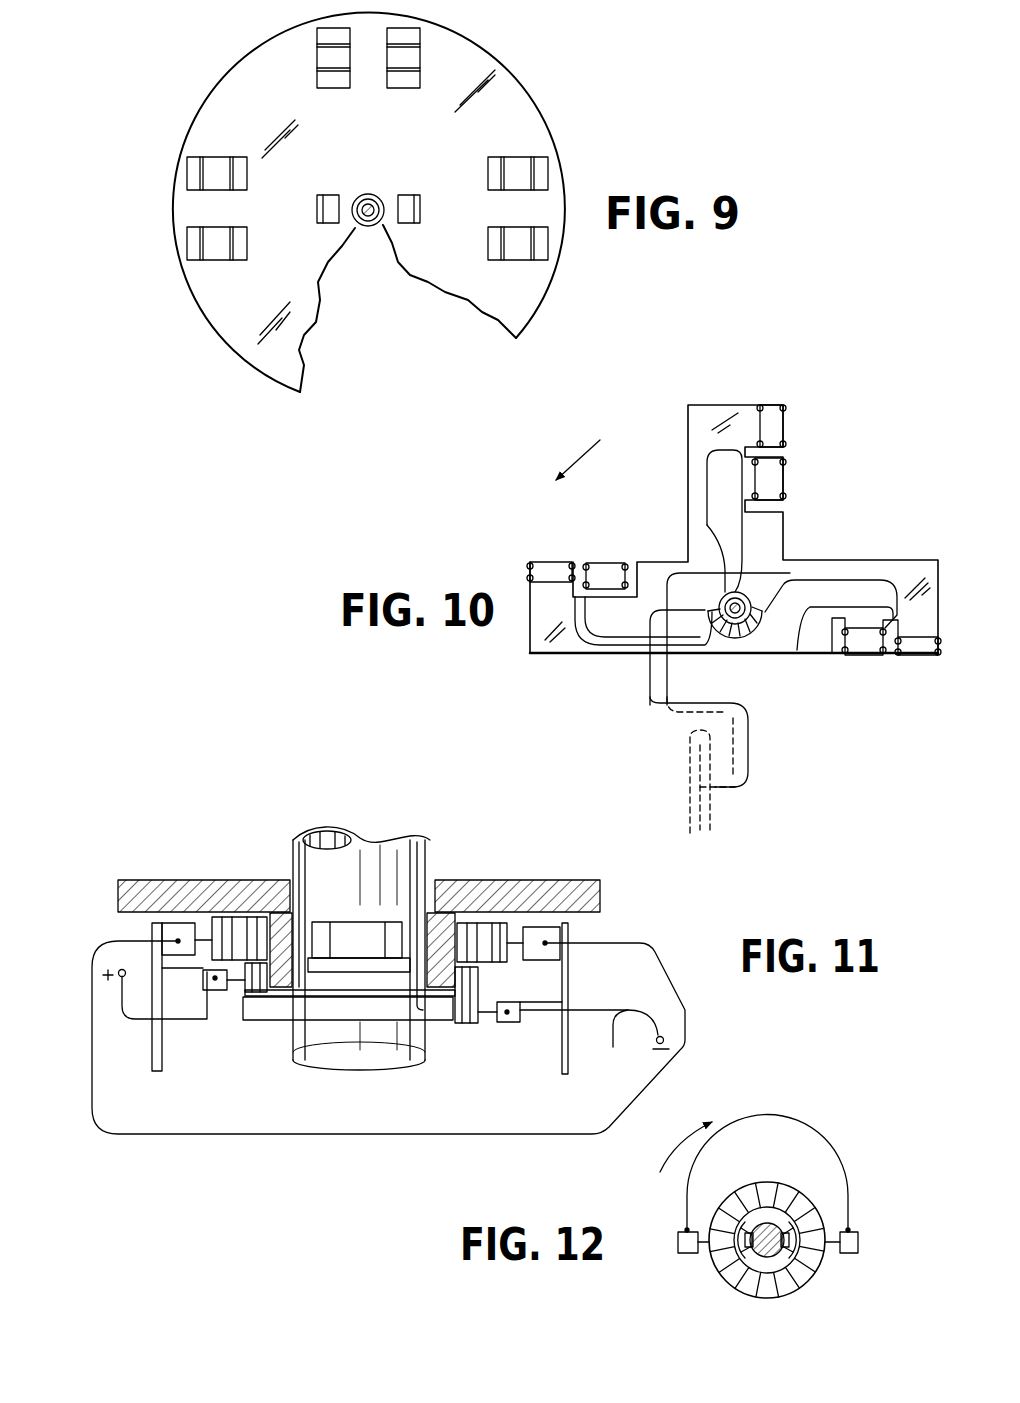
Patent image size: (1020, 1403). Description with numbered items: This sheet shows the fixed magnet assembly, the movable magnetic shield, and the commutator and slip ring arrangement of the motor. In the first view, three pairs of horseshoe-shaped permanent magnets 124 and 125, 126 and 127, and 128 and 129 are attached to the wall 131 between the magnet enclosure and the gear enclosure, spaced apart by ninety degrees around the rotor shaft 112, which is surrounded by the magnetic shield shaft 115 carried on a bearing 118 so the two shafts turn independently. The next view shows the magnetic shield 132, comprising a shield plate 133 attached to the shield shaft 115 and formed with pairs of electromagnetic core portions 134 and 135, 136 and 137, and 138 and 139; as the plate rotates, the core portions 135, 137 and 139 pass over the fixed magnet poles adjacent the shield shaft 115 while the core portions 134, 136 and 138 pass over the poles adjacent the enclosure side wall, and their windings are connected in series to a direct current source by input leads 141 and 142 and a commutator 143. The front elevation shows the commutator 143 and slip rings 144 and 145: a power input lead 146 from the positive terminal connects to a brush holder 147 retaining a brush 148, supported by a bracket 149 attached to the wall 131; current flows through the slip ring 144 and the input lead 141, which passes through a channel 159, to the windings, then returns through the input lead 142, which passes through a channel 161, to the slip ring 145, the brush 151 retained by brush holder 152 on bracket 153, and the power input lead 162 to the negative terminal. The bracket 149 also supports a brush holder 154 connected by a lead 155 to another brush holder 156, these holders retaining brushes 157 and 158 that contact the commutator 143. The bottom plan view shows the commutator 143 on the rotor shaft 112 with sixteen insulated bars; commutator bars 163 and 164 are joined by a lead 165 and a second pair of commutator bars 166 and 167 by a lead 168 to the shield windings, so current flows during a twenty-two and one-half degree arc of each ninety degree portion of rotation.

In FIG. 9, the rotor shaft 112 is at (378, 200).
In FIG. 10, the rotor shaft 112 is at (718, 622).
In FIG. 12, the rotor shaft 112 is at (767, 1258).
In FIG. 9, the magnetic shield shaft 115 is at (353, 230).
In FIG. 10, the magnetic shield shaft 115 is at (735, 626).
In FIG. 11, the magnetic shield shaft 115 is at (402, 830).
In FIG. 9, the bearing 118 is at (383, 228).
In FIG. 10, the bearing 118 is at (742, 592).
In FIG. 9, the fixed permanent magnet 124 is at (212, 250).
In FIG. 9, the fixed permanent magnet 125 is at (210, 160).
In FIG. 9, the fixed permanent magnet 126 is at (323, 60).
In FIG. 9, the fixed permanent magnet 127 is at (405, 56).
In FIG. 9, the fixed permanent magnet 128 is at (525, 165).
In FIG. 9, the fixed permanent magnet 129 is at (523, 253).
In FIG. 9, the wall 131 is at (361, 158).
In FIG. 10, the magnetic shield 132 is at (885, 505).
In FIG. 10, the shield plate 133 is at (695, 440).
In FIG. 11, the shield plate 133 is at (600, 884).
In FIG. 10, the electromagnetic core portion 134 is at (527, 570).
In FIG. 10, the electromagnetic core portion 135 is at (606, 562).
In FIG. 10, the electromagnetic core portion 136 is at (765, 403).
In FIG. 10, the electromagnetic core portion 137 is at (785, 485).
In FIG. 10, the electromagnetic core portion 138 is at (930, 645).
In FIG. 10, the electromagnetic core portion 139 is at (876, 655).
In FIG. 10, the input lead 141 is at (648, 690).
In FIG. 11, the input lead 141 is at (288, 845).
In FIG. 10, the input lead 142 is at (835, 578).
In FIG. 11, the input lead 142 is at (440, 850).
In FIG. 10, the commutator 143 is at (775, 652).
In FIG. 11, the commutator 143 is at (520, 962).
In FIG. 12, the commutator 143 is at (868, 1122).
In FIG. 11, the slip ring 144 is at (478, 978).
In FIG. 11, the slip ring 145 is at (290, 1021).
In FIG. 11, the power input lead 146 is at (122, 995).
In FIG. 11, the brush holder 147 is at (215, 992).
In FIG. 11, the brush 148 is at (237, 993).
In FIG. 11, the bracket 149 is at (152, 1050).
In FIG. 11, the brush 151 is at (475, 1025).
In FIG. 11, the brush holder 152 is at (507, 1023).
In FIG. 11, the bracket 153 is at (562, 1085).
In FIG. 11, the brush holder 154 is at (175, 930).
In FIG. 12, the brush holder 154 is at (681, 1250).
In FIG. 11, the lead 155 is at (640, 943).
In FIG. 12, the lead 155 is at (785, 1116).
In FIG. 11, the brush holder 156 is at (555, 942).
In FIG. 12, the brush holder 156 is at (860, 1245).
In FIG. 11, the brush 157 is at (205, 925).
In FIG. 12, the brush 157 is at (700, 1255).
In FIG. 11, the brush 158 is at (518, 935).
In FIG. 12, the brush 158 is at (835, 1260).
In FIG. 11, the channel 159 is at (280, 897).
In FIG. 11, the channel 161 is at (445, 898).
In FIG. 11, the power input lead 162 is at (594, 1042).
In FIG. 12, the commutator bar 163 is at (722, 1222).
In FIG. 12, the commutator bar 164 is at (815, 1268).
In FIG. 10, the lead 165 is at (707, 525).
In FIG. 12, the lead 165 is at (745, 1248).
In FIG. 12, the commutator bar 166 is at (753, 1285).
In FIG. 12, the commutator bar 167 is at (785, 1200).
In FIG. 12, the lead 168 is at (810, 1225).